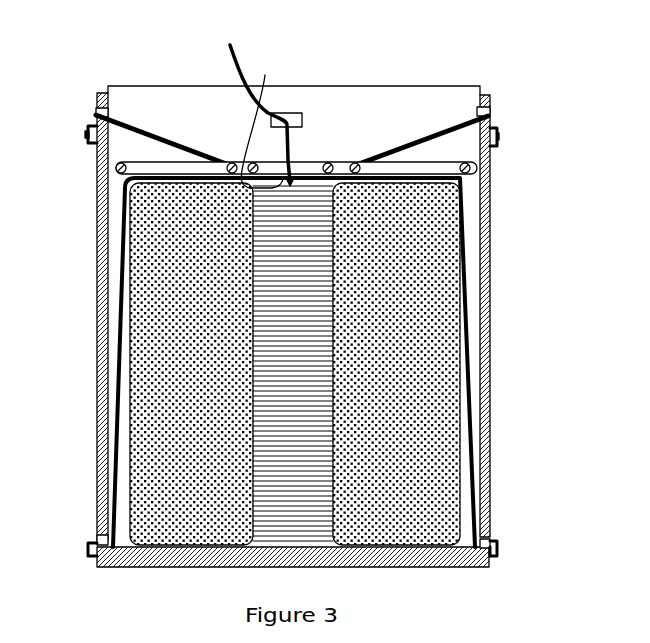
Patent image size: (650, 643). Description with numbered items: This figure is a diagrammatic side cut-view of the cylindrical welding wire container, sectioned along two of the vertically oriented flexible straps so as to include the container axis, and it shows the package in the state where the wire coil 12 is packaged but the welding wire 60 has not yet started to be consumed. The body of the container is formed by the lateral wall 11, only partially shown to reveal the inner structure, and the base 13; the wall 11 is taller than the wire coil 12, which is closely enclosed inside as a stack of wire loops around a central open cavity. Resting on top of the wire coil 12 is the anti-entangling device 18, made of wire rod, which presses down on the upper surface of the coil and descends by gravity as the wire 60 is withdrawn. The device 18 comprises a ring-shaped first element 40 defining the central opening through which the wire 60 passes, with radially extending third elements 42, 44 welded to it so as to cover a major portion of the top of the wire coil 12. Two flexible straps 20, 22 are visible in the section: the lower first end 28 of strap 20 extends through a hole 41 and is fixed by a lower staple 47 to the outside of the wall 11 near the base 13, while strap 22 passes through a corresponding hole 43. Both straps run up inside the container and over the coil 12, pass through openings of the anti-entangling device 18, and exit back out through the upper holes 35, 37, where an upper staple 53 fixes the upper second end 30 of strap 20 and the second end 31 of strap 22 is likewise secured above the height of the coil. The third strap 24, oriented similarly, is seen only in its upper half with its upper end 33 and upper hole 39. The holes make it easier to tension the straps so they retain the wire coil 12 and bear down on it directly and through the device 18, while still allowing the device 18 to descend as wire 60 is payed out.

The lateral wall 11 is at (490, 260).
The wire coil 12 is at (450, 288).
The base 13 is at (165, 553).
The anti-entangling device 18 is at (207, 160).
The flexible strap 20 is at (417, 133).
The flexible strap 22 is at (160, 130).
The third strap 24 is at (303, 140).
The first end of strap 28 is at (492, 557).
The second end of strap 30 is at (497, 128).
The second end of strap 31 is at (95, 118).
The upper end of strap 33 is at (265, 75).
The upper hole 35 is at (493, 109).
The upper hole 37 is at (93, 108).
The upper hole 39 is at (288, 112).
The ring-shaped first element 40 is at (333, 163).
The hole 41 is at (497, 533).
The radially extending third element 42 is at (437, 170).
The hole 43 is at (93, 533).
The radially extending third element 44 is at (97, 150).
The lower staple 47 is at (498, 545).
The upper staple 53 is at (500, 137).
The welding wire 60 is at (235, 70).